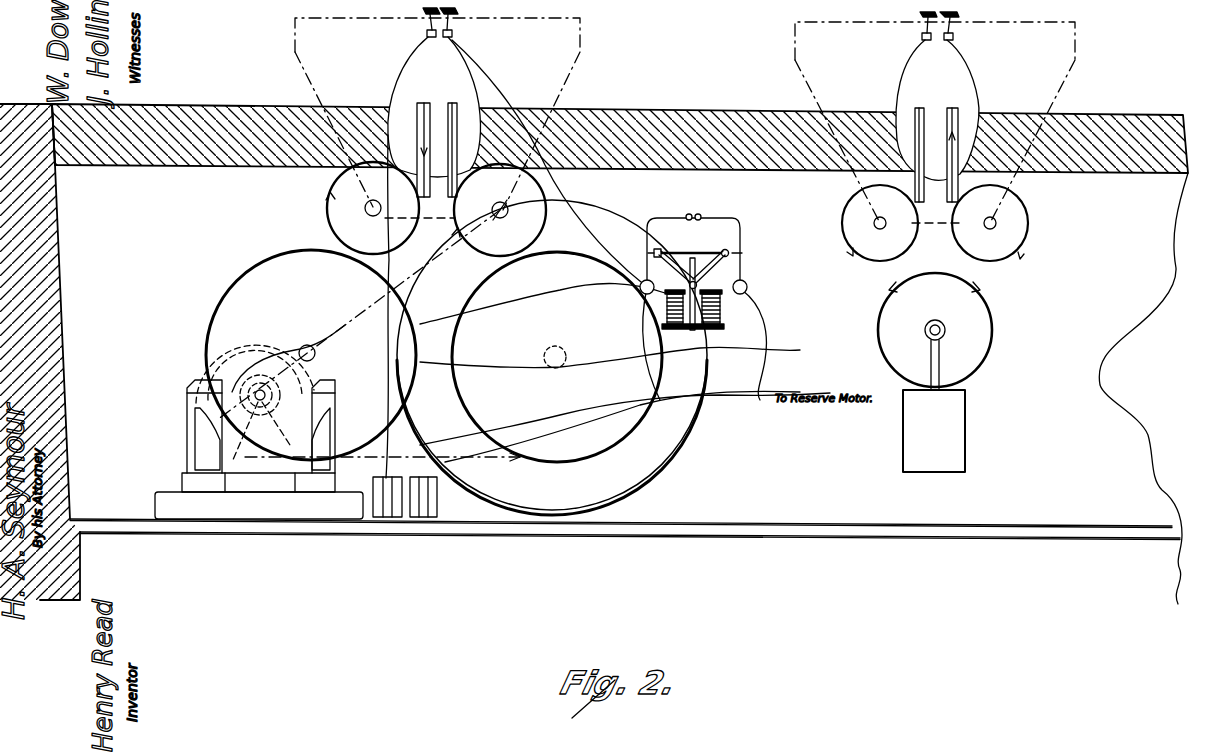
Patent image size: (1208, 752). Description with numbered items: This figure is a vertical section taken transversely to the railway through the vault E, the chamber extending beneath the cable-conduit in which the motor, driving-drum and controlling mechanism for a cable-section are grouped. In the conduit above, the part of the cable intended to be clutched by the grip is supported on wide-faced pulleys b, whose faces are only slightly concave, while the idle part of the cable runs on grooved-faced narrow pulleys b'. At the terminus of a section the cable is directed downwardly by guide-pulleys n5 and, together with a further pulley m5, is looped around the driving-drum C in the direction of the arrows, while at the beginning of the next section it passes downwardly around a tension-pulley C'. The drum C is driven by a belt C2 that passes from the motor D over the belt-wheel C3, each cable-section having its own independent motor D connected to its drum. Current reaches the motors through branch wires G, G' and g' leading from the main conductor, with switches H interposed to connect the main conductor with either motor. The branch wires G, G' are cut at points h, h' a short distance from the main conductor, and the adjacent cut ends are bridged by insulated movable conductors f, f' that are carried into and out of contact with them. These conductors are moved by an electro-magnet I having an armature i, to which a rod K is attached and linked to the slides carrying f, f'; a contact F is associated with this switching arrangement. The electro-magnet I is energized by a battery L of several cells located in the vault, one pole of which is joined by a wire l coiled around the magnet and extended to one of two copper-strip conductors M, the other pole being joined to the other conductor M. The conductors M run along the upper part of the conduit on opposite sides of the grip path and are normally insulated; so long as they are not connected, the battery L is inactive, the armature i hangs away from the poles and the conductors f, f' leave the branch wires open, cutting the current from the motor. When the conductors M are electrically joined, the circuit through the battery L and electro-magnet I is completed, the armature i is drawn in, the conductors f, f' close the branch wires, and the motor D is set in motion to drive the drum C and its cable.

The electrical conductors M is at (425, 37).
The wide-faced pulleys b is at (687, 144).
The grooved-faced narrow pulleys b' is at (681, 144).
The guide-pulleys n5 is at (328, 204).
The guide pulley m5 is at (548, 200).
The belt C2 is at (312, 355).
The driving-drum C is at (477, 357).
The belt-wheel C3 is at (660, 461).
The motor D is at (259, 422).
The battery L is at (386, 520).
The branch wire G is at (526, 259).
The branch wire G' is at (610, 302).
The branch wire g' is at (625, 412).
The wire l is at (540, 432).
The switches H is at (645, 281).
The contact points F is at (693, 207).
The movable conductor f is at (691, 243).
The movable conductor f' is at (727, 243).
The cut point h is at (643, 252).
The cut point h' is at (745, 250).
The rod K is at (692, 290).
The electro-magnet I is at (722, 307).
The armature i is at (693, 335).
The tension-pulley C' is at (935, 330).
The vault E is at (962, 406).